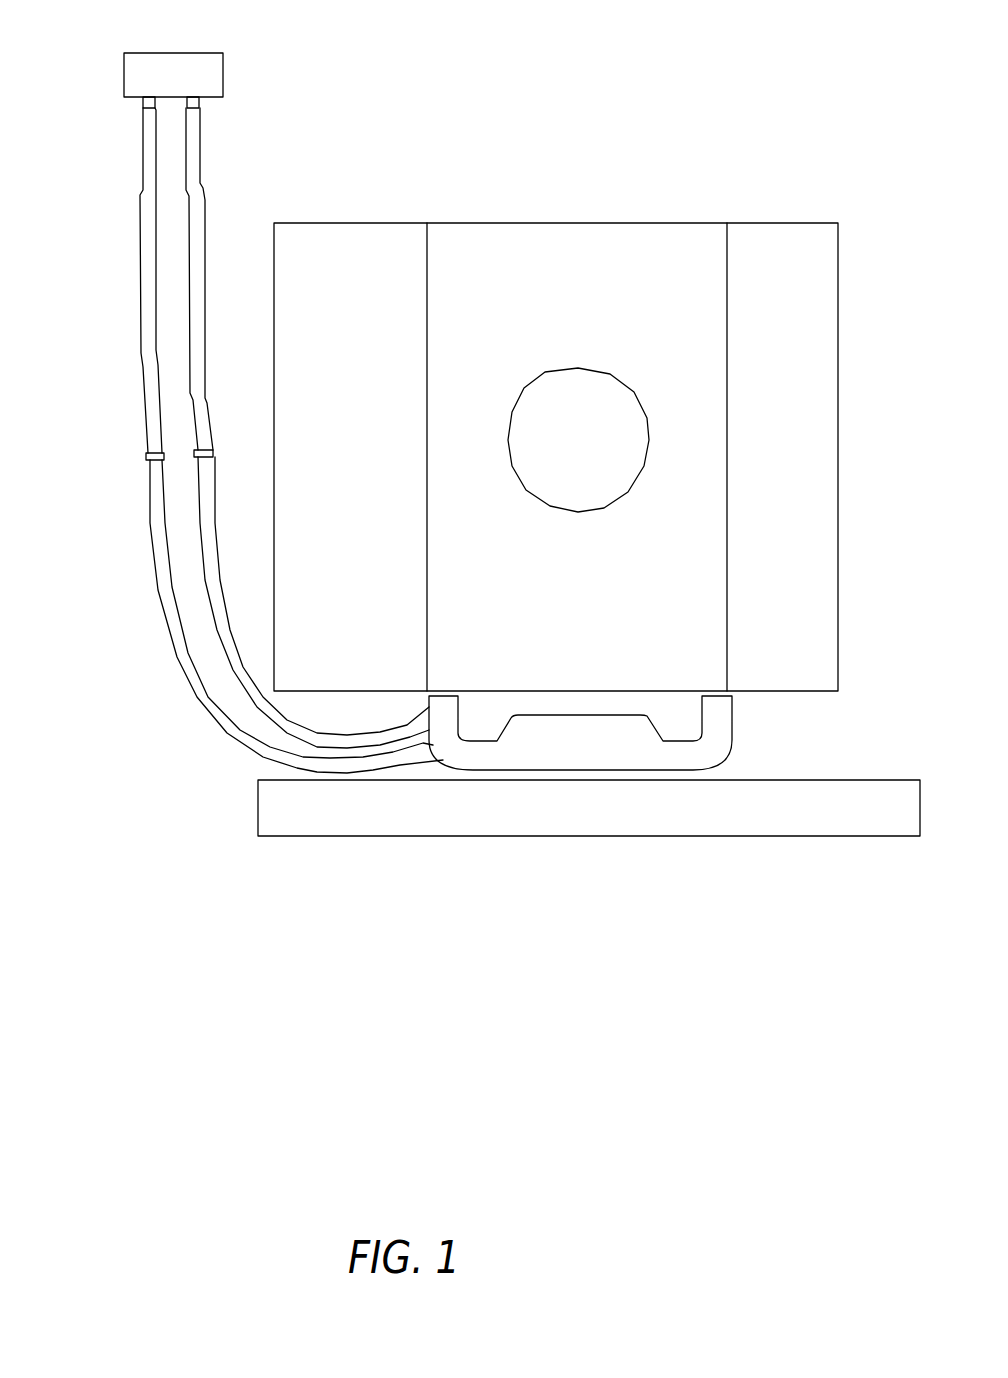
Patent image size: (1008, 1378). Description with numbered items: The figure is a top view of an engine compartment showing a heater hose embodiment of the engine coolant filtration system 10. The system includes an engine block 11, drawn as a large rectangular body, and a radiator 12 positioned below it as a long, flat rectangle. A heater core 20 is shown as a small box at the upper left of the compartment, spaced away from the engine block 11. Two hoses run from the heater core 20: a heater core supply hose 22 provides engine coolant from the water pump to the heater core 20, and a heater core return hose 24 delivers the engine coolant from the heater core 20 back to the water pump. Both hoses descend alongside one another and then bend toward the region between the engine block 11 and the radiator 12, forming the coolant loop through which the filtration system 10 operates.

The engine coolant filtration system 10 is at (134, 673).
The engine block 11 is at (810, 322).
The radiator 12 is at (833, 797).
The heater core 20 is at (212, 82).
The heater core supply hose 22 is at (197, 233).
The heater core return hose 24 is at (145, 290).